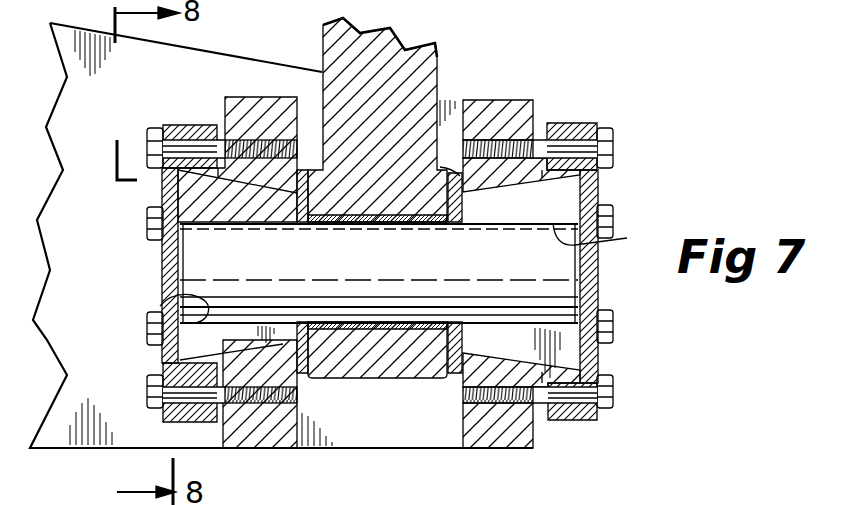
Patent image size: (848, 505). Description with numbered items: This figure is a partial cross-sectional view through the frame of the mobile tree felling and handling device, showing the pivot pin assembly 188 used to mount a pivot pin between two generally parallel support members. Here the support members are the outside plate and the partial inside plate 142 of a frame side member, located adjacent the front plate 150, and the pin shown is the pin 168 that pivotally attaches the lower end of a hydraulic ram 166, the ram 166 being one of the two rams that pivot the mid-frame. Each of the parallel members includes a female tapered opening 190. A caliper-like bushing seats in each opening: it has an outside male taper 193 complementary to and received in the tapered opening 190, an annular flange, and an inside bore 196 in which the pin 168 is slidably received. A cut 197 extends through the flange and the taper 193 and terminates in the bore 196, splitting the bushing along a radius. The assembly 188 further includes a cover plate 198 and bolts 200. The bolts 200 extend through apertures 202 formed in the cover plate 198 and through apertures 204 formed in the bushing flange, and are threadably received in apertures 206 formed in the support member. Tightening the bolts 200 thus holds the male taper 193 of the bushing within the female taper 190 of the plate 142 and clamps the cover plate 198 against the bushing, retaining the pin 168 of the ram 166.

The partial inside plate 142 is at (273, 97).
The front plate 150 is at (172, 87).
The hydraulic ram 166 is at (322, 42).
The pin 168 is at (560, 264).
The pivot pin assembly 188 is at (160, 266).
The female tapered opening 190 is at (237, 180).
The outside male taper 193 is at (276, 178).
The inside bore 196 is at (391, 273).
The cut 197 is at (220, 330).
The cover plate 198 is at (158, 253).
The bolt 200 is at (147, 215).
The aperture 202 is at (145, 402).
The aperture 204 is at (188, 143).
The aperture 206 is at (490, 140).